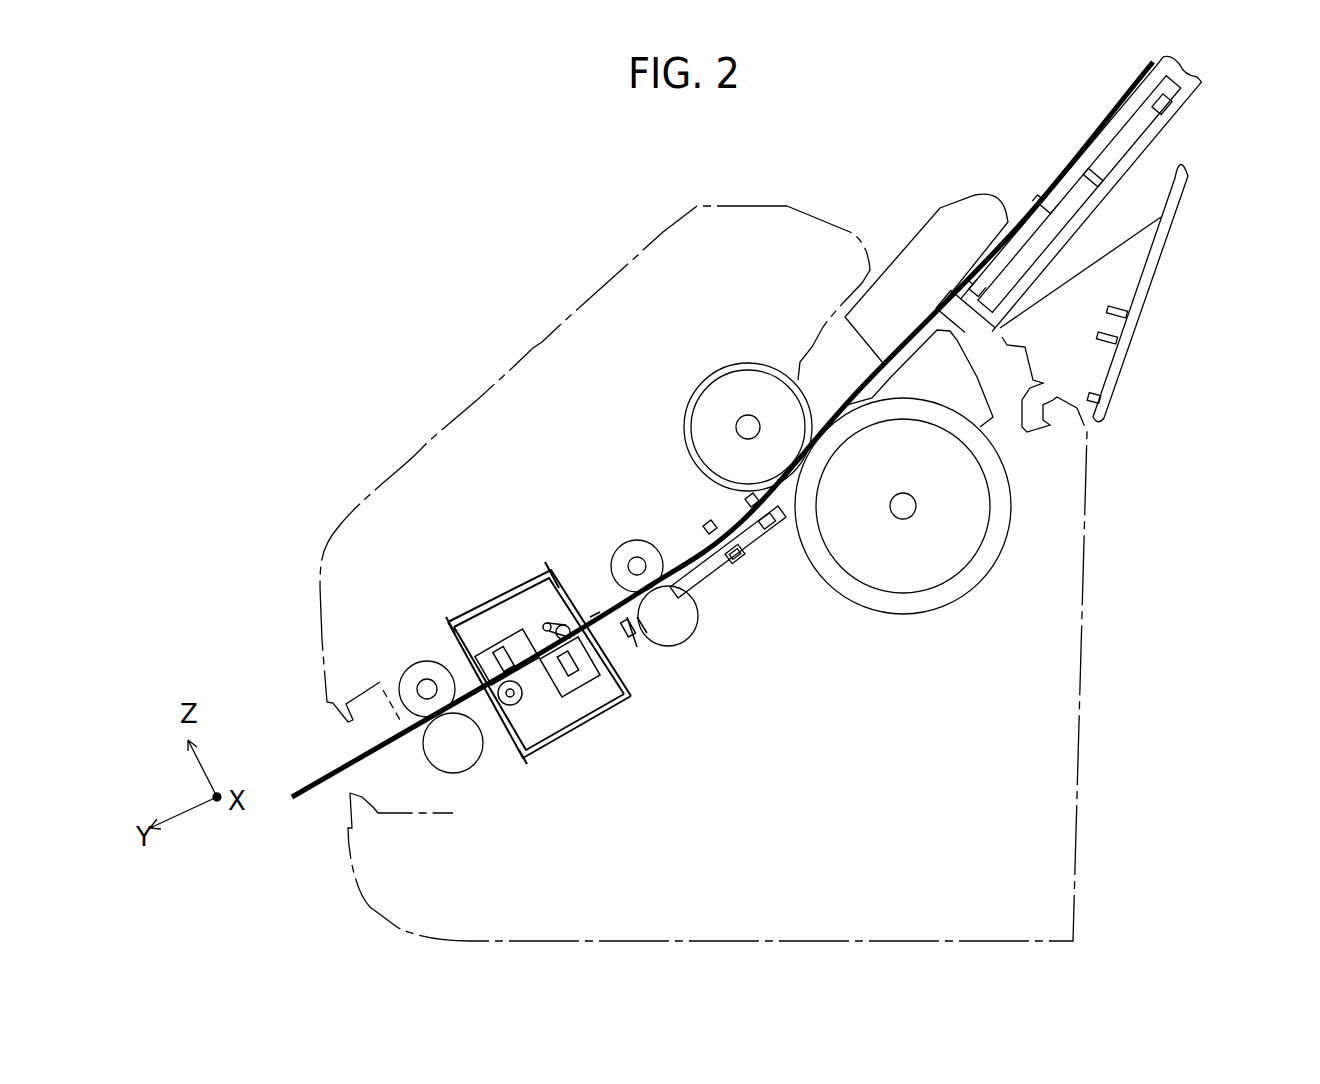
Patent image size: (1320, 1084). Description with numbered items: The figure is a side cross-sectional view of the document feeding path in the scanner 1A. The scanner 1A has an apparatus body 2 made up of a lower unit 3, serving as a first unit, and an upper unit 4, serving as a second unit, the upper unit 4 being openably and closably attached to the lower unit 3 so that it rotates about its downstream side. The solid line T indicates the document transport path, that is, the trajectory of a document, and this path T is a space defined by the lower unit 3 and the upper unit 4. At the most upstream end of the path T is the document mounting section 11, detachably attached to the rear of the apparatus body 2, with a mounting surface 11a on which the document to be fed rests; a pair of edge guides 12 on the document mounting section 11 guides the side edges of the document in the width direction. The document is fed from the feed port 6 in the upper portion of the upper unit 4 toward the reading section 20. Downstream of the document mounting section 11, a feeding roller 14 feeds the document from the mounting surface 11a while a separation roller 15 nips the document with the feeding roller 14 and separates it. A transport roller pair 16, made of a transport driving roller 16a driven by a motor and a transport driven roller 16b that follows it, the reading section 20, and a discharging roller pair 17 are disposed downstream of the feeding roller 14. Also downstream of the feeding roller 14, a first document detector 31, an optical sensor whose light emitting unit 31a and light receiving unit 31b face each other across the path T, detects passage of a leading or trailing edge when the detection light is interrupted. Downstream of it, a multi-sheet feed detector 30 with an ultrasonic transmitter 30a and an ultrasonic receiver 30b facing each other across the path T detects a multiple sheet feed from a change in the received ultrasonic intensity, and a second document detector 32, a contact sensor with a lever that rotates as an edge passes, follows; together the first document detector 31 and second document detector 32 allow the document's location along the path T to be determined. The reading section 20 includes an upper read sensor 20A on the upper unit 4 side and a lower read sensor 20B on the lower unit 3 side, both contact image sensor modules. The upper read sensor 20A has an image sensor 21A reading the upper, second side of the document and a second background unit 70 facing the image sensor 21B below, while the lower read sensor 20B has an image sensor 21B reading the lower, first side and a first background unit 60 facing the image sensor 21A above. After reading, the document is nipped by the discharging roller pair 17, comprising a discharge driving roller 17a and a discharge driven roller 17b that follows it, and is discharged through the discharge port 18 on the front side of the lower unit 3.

The scanner 1A is at (471, 190).
The apparatus body 2 is at (1105, 518).
The lower unit 3 is at (1082, 590).
The upper unit 4 is at (537, 345).
The feed port 6 is at (831, 347).
The document mounting section 11 is at (1105, 244).
The mounting surface 11a is at (1062, 172).
The edge guides 12 is at (955, 228).
The feeding roller 14 is at (975, 597).
The separation roller 15 is at (707, 373).
The transport roller pair 16 is at (686, 648).
The transport driving roller 16a is at (683, 627).
The transport driven roller 16b is at (643, 585).
The discharging roller pair 17 is at (469, 782).
The discharge driving roller 17a is at (460, 747).
The discharge driven roller 17b is at (419, 706).
The discharge port 18 is at (355, 745).
The reading section 20 is at (540, 629).
The upper read sensor 20A is at (513, 600).
The lower read sensor 20B is at (567, 737).
The image sensor 21A is at (495, 621).
The image sensor 21B is at (600, 687).
The multi-sheet feed detector 30 is at (686, 516).
The ultrasonic transmitter 30a is at (703, 538).
The ultrasonic receiver 30b is at (748, 508).
The first document detector 31 is at (778, 591).
The light emitting unit 31a is at (768, 524).
The light receiving unit 31b is at (752, 524).
The second document detector 32 is at (623, 620).
The first background unit 60 is at (538, 714).
The second background unit 70 is at (563, 604).
The document transport path T is at (1110, 118).